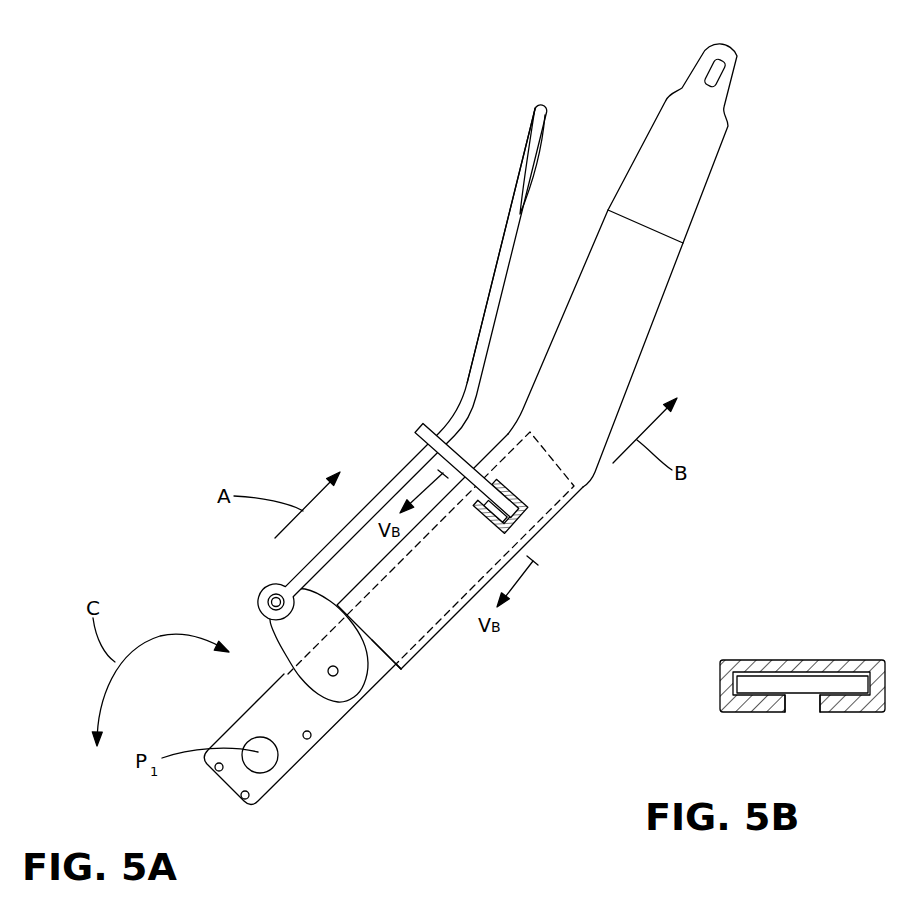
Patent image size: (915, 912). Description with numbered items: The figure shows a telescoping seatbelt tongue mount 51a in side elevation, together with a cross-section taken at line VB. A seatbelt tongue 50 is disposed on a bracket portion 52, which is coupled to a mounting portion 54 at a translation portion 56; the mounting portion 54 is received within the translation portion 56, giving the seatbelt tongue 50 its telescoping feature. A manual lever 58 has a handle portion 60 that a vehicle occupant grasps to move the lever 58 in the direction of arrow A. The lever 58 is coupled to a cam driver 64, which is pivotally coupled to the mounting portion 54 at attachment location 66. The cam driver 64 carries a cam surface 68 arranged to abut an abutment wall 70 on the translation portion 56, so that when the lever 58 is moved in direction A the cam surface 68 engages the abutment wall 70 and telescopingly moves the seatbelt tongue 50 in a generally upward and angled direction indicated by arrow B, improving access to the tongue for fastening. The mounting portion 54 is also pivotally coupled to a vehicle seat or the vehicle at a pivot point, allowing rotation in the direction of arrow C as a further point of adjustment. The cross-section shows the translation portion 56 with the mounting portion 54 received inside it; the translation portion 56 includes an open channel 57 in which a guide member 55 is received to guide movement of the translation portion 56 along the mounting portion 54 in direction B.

In FIG. 5A, the seatbelt tongue 50 is at (698, 165).
In FIG. 5A, the seatbelt tongue mount 51a is at (480, 284).
In FIG. 5A, the bracket portion 52 is at (652, 277).
In FIG. 5A, the mounting portion 54 is at (260, 718).
In FIG. 5B, the mounting portion 54 is at (750, 683).
In FIG. 5B, the guide member 55 is at (797, 698).
In FIG. 5A, the translation portion 56 is at (557, 518).
In FIG. 5B, the translation portion 56 is at (855, 663).
In FIG. 5B, the open channel 57 is at (822, 700).
In FIG. 5A, the manual lever 58 is at (455, 407).
In FIG. 5A, the handle portion 60 is at (543, 157).
In FIG. 5A, the cam driver 64 is at (283, 625).
In FIG. 5A, the attachment location 66 is at (338, 675).
In FIG. 5A, the cam surface 68 is at (370, 660).
In FIG. 5A, the abutment wall 70 is at (373, 652).